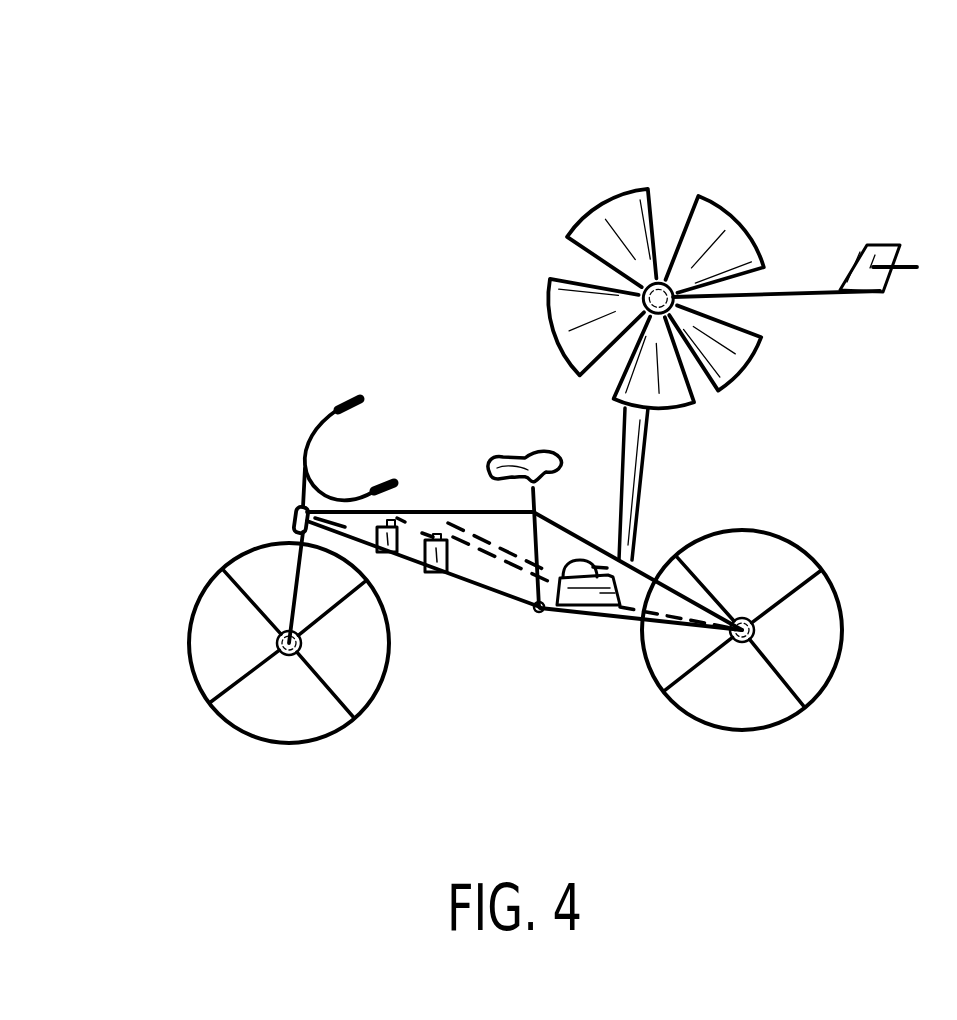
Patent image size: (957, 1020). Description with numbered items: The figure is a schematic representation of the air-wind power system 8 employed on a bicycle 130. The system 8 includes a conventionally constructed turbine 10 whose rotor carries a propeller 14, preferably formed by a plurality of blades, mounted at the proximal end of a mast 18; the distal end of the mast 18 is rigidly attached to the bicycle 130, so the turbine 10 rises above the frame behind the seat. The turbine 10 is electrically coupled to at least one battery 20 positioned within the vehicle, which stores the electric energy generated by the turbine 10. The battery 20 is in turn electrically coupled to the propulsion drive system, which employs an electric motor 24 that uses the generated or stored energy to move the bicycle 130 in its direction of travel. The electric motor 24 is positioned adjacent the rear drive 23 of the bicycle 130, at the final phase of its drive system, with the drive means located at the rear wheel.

The air-wind power system 8 is at (213, 352).
The turbine 10 is at (860, 137).
The propeller 14 is at (716, 194).
The mast 18 is at (643, 473).
The battery 20 is at (430, 574).
The rear drive 23 is at (755, 627).
The electric motor 24 is at (597, 588).
The bicycle 130 is at (282, 743).